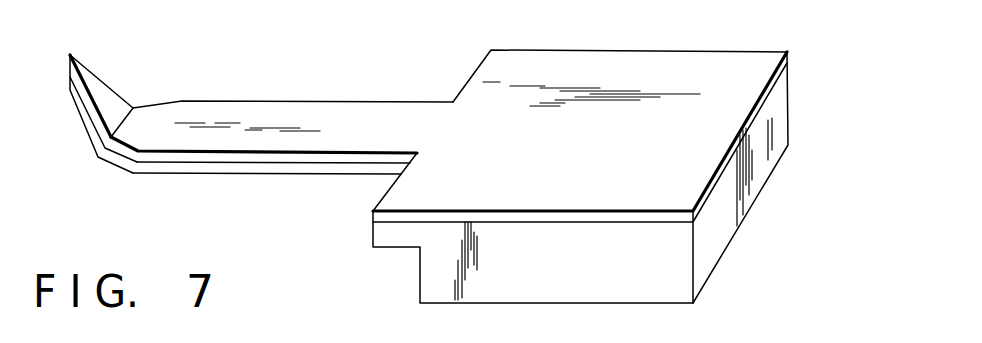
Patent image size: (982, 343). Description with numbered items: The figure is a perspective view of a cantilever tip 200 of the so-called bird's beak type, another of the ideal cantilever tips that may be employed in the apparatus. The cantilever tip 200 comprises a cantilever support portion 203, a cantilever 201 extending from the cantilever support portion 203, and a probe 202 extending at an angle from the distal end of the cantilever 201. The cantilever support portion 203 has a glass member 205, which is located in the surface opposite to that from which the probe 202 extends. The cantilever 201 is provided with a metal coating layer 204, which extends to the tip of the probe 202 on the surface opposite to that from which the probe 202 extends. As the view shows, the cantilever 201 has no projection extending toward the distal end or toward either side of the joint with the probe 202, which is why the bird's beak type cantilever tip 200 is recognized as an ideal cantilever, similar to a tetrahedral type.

The cantilever tip 200 is at (392, 82).
The cantilever 201 is at (258, 115).
The probe 202 is at (95, 82).
The cantilever support portion 203 is at (587, 70).
The metal coating layer 204 is at (207, 170).
The glass member 205 is at (665, 263).